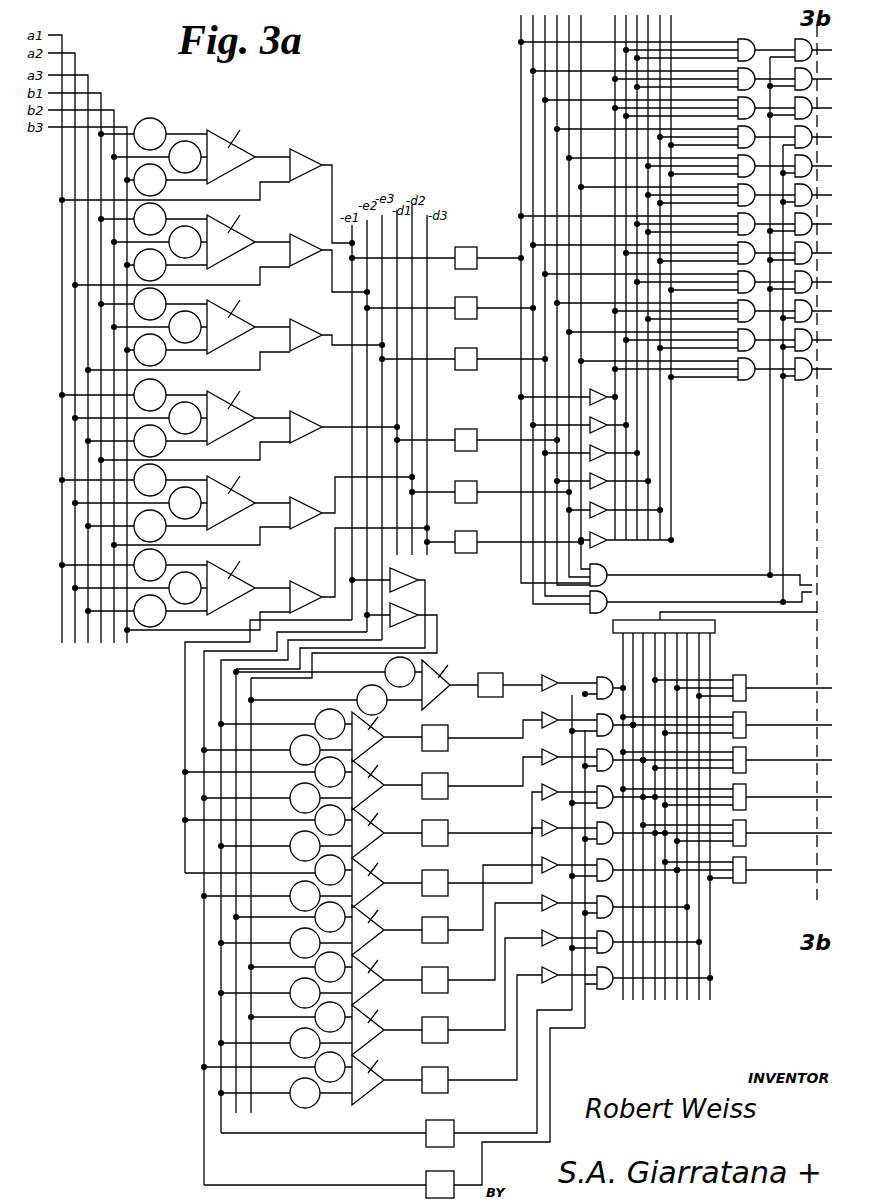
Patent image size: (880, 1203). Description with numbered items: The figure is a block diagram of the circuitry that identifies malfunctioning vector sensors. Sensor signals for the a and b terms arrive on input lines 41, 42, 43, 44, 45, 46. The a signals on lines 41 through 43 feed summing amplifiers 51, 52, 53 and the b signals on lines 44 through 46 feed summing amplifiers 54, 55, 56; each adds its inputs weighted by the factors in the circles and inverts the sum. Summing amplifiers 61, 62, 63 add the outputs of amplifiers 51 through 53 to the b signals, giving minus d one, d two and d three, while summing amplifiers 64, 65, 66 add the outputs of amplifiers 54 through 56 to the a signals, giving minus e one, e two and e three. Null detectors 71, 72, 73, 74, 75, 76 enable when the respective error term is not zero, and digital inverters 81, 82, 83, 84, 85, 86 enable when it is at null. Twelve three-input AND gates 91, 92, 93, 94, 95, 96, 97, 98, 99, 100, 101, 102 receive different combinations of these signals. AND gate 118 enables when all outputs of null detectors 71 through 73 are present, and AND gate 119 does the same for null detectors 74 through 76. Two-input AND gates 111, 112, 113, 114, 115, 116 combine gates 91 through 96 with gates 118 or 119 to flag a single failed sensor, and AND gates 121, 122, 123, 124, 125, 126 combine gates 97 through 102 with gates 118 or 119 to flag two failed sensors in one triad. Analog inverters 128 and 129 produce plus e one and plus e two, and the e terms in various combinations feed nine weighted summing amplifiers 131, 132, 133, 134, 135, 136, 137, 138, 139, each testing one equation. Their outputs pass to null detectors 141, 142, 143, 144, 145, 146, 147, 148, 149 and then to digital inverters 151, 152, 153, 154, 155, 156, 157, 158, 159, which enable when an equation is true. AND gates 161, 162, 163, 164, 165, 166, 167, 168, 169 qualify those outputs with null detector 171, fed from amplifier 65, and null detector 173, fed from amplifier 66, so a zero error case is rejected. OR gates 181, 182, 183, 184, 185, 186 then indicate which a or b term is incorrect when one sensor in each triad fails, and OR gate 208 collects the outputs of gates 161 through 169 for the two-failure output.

The input line 41 is at (62, 154).
The input line 42 is at (75, 177).
The input line 43 is at (88, 200).
The input line 44 is at (101, 93).
The input line 45 is at (114, 110).
The input line 46 is at (127, 127).
The summing amplifier 51 is at (234, 403).
The summing amplifier 52 is at (234, 488).
The summing amplifier 53 is at (234, 573).
The summing amplifier 54 is at (234, 142).
The summing amplifier 55 is at (234, 228).
The summing amplifier 56 is at (234, 313).
The summing amplifier 61 is at (299, 412).
The summing amplifier 62 is at (296, 497).
The summing amplifier 63 is at (299, 582).
The summing amplifier 64 is at (297, 150).
The summing amplifier 65 is at (297, 235).
The summing amplifier 66 is at (297, 320).
The null detector 71 is at (466, 429).
The null detector 72 is at (470, 488).
The null detector 73 is at (470, 538).
The null detector 74 is at (466, 247).
The null detector 75 is at (466, 297).
The null detector 76 is at (466, 348).
The digital inverter 81 is at (602, 473).
The digital inverter 82 is at (614, 502).
The digital inverter 83 is at (600, 546).
The digital inverter 84 is at (568, 389).
The digital inverter 85 is at (579, 417).
The digital inverter 86 is at (591, 445).
The AND gate 91 is at (743, 39).
The AND gate 92 is at (664, 71).
The AND gate 93 is at (670, 100).
The AND gate 94 is at (676, 129).
The AND gate 95 is at (682, 158).
The AND gate 96 is at (688, 187).
The AND gate 97 is at (658, 216).
The AND gate 98 is at (664, 245).
The AND gate 99 is at (670, 274).
The AND gate 100 is at (676, 303).
The AND gate 101 is at (682, 332).
The AND gate 102 is at (746, 380).
The AND gate 111 is at (825, 50).
The AND gate 112 is at (817, 74).
The AND gate 113 is at (817, 103).
The AND gate 114 is at (824, 132).
The AND gate 115 is at (824, 161).
The AND gate 116 is at (824, 190).
The AND gate 118 is at (605, 574).
The AND gate 119 is at (605, 602).
The AND gate 121 is at (817, 219).
The AND gate 122 is at (817, 248).
The AND gate 123 is at (817, 277).
The AND gate 124 is at (824, 306).
The AND gate 125 is at (824, 335).
The AND gate 126 is at (824, 364).
The analog inverter 128 is at (418, 576).
The analog inverter 129 is at (418, 610).
The summing amplifier 131 is at (434, 680).
The summing amplifier 132 is at (380, 735).
The summing amplifier 133 is at (380, 783).
The summing amplifier 134 is at (380, 831).
The summing amplifier 135 is at (380, 881).
The summing amplifier 136 is at (380, 928).
The summing amplifier 137 is at (380, 978).
The summing amplifier 138 is at (380, 1028).
The summing amplifier 139 is at (380, 1078).
The null detector 141 is at (486, 673).
The null detector 142 is at (448, 728).
The null detector 143 is at (448, 776).
The null detector 144 is at (448, 824).
The null detector 145 is at (448, 873).
The null detector 146 is at (448, 920).
The null detector 147 is at (448, 970).
The null detector 148 is at (448, 1020).
The null detector 149 is at (448, 1070).
The digital inverter 151 is at (555, 671).
The digital inverter 152 is at (546, 712).
The digital inverter 153 is at (546, 750).
The digital inverter 154 is at (546, 785).
The digital inverter 155 is at (546, 821).
The digital inverter 156 is at (542, 870).
The digital inverter 157 is at (542, 903).
The digital inverter 158 is at (542, 938).
The digital inverter 159 is at (542, 973).
The AND gate 161 is at (600, 677).
The AND gate 162 is at (597, 718).
The AND gate 163 is at (597, 753).
The AND gate 164 is at (597, 790).
The AND gate 165 is at (597, 826).
The AND gate 166 is at (597, 863).
The AND gate 167 is at (597, 900).
The AND gate 168 is at (597, 935).
The AND gate 169 is at (602, 989).
The null detector 171 is at (437, 1171).
The null detector 173 is at (454, 1125).
The OR gate 181 is at (746, 680).
The OR gate 182 is at (746, 717).
The OR gate 183 is at (746, 752).
The OR gate 184 is at (746, 789).
The OR gate 185 is at (746, 825).
The OR gate 186 is at (746, 862).
The OR gate 208 is at (715, 627).